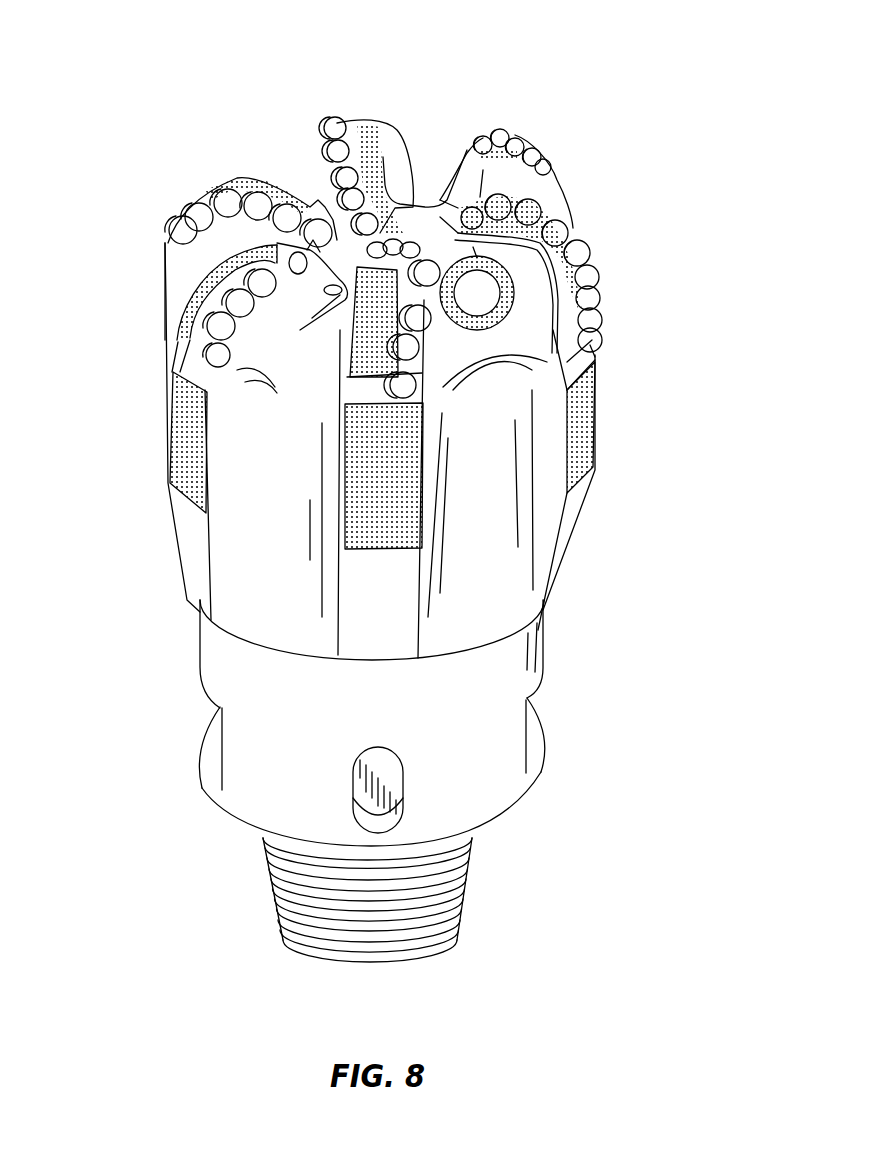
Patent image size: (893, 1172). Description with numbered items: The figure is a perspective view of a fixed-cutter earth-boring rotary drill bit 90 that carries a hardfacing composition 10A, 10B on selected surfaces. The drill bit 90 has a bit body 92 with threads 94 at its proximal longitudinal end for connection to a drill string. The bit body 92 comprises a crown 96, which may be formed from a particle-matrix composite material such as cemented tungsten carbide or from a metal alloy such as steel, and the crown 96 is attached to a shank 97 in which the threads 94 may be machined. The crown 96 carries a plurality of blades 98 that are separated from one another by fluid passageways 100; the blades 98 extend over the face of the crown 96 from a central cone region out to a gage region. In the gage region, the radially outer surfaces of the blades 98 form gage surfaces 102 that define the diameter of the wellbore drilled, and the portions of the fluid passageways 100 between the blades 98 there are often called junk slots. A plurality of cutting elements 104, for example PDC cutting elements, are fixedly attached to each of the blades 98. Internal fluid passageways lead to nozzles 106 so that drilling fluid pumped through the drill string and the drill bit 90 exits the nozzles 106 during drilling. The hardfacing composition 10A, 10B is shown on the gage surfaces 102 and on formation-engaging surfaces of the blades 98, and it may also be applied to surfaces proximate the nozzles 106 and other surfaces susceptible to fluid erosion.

The fixed-cutter drill bit 90 is at (186, 63).
The bit body 92 is at (158, 558).
The threads 94 is at (251, 893).
The crown 96 is at (498, 408).
The shank 97 is at (492, 687).
The blades 98 is at (233, 173).
The fluid passageways 100 is at (277, 355).
The gage surfaces 102 is at (158, 450).
The cutting elements 104 is at (193, 207).
The nozzles 106 is at (477, 293).
The hardfacing composition 10A is at (667, 437).
The hardfacing composition 10B is at (368, 472).